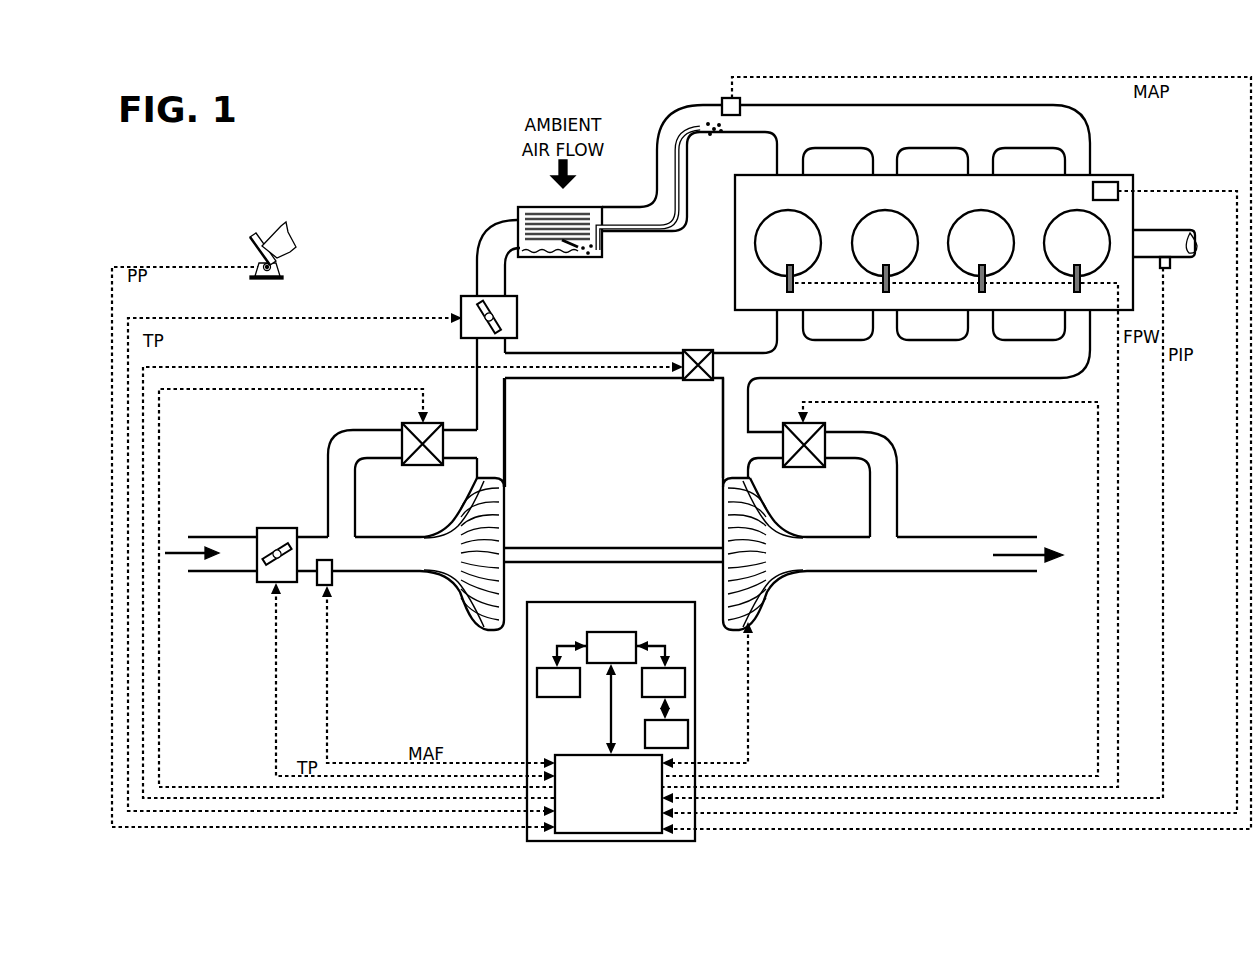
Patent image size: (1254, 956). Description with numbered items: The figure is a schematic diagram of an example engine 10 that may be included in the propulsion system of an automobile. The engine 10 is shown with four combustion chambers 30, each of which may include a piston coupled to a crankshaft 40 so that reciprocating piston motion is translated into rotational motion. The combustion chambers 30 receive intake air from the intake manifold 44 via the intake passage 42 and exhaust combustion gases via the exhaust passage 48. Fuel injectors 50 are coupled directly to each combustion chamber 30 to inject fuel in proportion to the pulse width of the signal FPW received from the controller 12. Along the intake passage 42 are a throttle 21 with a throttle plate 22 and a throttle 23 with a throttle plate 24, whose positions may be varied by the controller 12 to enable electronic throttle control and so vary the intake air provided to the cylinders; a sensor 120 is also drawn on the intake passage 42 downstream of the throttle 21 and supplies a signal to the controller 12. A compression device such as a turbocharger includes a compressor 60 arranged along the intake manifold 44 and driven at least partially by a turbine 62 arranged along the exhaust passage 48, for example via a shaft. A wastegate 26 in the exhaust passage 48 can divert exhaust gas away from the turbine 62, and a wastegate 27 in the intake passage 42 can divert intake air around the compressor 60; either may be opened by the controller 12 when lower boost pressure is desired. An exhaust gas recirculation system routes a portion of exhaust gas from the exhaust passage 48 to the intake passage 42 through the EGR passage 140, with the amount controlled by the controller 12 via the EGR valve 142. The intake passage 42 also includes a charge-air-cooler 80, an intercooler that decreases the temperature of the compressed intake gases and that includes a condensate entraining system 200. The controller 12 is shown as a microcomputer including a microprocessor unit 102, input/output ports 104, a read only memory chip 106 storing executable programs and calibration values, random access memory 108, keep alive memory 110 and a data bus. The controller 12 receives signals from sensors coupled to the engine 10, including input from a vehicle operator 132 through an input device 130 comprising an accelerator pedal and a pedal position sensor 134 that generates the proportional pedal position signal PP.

The engine 10 is at (1010, 202).
The controller 12 is at (552, 737).
The throttle 21 is at (257, 527).
The throttle plate 22 is at (283, 547).
The throttle 23 is at (462, 296).
The throttle plate 24 is at (497, 330).
The wastegate 26 is at (825, 431).
The wastegate 27 is at (402, 428).
The combustion chamber 30 is at (778, 250).
The crankshaft 40 is at (1170, 230).
The intake passage 42 is at (225, 565).
The intake manifold 44 is at (824, 134).
The exhaust passage 48 is at (778, 371).
The fuel injector 50 is at (787, 292).
The compressor 60 is at (463, 590).
The turbine 62 is at (766, 508).
The charge-air-cooler 80 is at (520, 207).
The microprocessor unit 102 is at (585, 640).
The input/output ports 104 is at (620, 831).
The read only memory chip 106 is at (537, 690).
The random access memory 108 is at (685, 668).
The keep alive memory 110 is at (688, 722).
The mass air flow sensor 120 is at (332, 576).
The input device 130 is at (250, 242).
The vehicle operator 132 is at (291, 230).
The pedal position sensor 134 is at (285, 264).
The EGR passage 140 is at (596, 353).
The EGR valve 142 is at (700, 350).
The condensate entraining system 200 is at (624, 251).